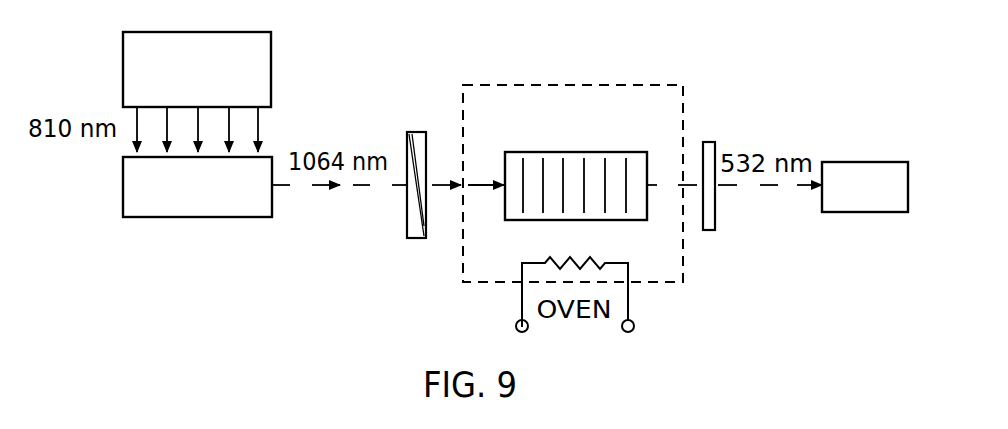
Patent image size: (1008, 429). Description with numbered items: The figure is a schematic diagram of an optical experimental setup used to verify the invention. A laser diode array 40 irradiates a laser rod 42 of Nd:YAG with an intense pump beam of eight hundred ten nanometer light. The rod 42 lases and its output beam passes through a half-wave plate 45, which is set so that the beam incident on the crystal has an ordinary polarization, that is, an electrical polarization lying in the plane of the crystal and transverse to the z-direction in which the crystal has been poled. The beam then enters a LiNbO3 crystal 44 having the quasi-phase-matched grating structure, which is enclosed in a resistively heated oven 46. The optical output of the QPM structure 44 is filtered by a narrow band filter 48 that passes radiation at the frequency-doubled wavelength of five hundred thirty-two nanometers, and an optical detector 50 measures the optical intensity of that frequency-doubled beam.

The laser diode array 40 is at (265, 68).
The laser rod 42 is at (267, 202).
The LiNbO3 crystal 44 is at (637, 202).
The half-wave plate 45 is at (412, 227).
The resistively heated oven 46 is at (643, 82).
The narrow band filter 48 is at (712, 202).
The optical detector 50 is at (877, 207).